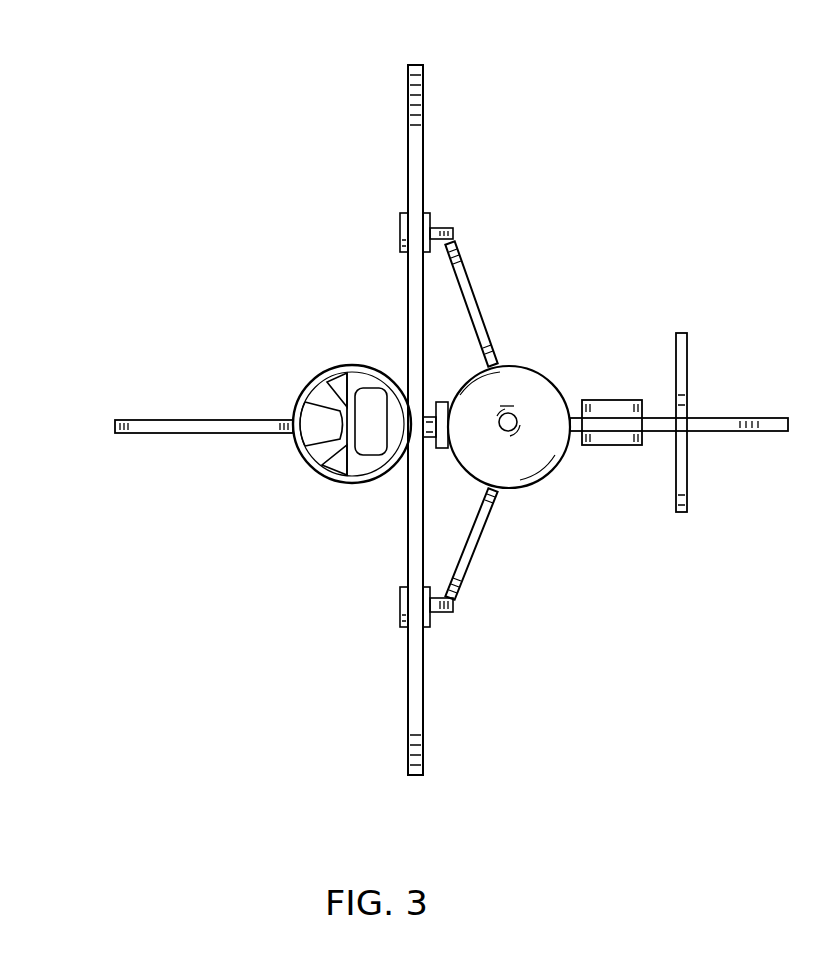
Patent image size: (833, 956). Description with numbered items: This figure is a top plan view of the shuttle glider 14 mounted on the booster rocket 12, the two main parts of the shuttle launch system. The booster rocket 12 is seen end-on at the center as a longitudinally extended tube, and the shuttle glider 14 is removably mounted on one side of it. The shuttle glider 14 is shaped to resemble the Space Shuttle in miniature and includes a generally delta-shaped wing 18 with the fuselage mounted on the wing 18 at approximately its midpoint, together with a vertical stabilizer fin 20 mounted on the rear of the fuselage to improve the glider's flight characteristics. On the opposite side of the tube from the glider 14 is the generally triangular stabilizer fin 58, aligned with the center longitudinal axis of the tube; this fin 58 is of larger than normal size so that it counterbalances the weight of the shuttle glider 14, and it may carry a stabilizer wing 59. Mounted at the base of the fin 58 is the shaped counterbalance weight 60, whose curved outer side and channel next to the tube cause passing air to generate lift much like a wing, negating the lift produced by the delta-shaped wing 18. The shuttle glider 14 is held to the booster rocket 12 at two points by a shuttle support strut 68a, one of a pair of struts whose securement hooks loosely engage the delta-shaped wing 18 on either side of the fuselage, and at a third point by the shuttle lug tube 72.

The booster rocket 12 is at (545, 384).
The shuttle glider 14 is at (335, 402).
The delta-shaped wing 18 is at (415, 542).
The vertical stabilizer fin 20 is at (210, 425).
The stabilizer fin 58 is at (730, 418).
The stabilizer wing 59 is at (686, 368).
The shaped counterbalance weight 60 is at (610, 437).
The shuttle support strut 68a is at (475, 292).
The shuttle lug tube 72 is at (410, 407).